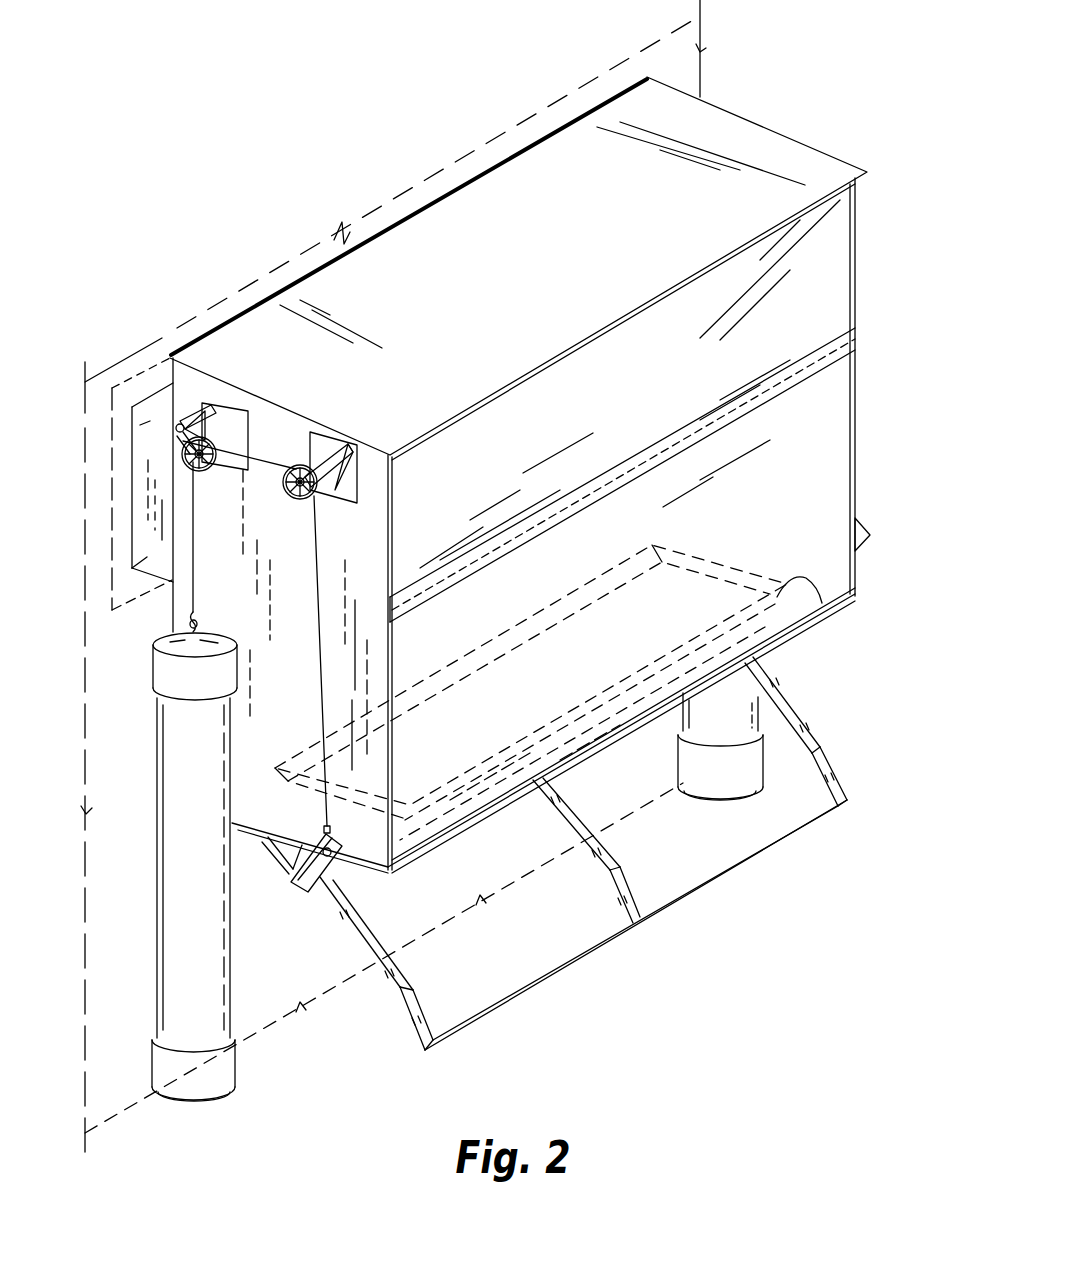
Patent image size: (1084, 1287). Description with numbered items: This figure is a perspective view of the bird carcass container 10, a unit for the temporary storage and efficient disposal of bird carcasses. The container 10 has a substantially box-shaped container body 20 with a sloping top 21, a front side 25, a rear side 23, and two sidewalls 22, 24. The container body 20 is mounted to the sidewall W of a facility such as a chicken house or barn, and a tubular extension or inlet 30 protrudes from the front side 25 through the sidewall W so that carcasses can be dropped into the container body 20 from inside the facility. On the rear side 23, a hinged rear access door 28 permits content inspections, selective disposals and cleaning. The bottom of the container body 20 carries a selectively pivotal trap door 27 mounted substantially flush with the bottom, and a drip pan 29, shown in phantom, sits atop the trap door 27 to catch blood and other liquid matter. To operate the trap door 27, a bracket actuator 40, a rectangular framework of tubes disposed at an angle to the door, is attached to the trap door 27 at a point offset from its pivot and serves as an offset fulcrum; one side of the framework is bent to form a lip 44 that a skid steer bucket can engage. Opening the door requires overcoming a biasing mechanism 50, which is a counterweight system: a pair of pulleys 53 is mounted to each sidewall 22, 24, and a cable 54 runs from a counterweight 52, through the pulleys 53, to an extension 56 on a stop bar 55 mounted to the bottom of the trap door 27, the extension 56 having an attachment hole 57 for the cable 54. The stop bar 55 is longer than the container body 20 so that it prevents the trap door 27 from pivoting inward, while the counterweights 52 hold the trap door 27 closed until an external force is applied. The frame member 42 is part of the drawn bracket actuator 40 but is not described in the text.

The bird carcass container 10 is at (873, 66).
The container body 20 is at (540, 502).
The sloping top 21 is at (520, 257).
The sidewall 22 is at (341, 591).
The rear side 23 is at (822, 503).
The sidewall 24 is at (857, 245).
The front side 25 is at (172, 364).
The trap door 27 is at (793, 637).
The rear access door 28 is at (613, 404).
The drip pan 29 is at (826, 617).
The inlet 30 is at (145, 561).
The bracket actuator 40 is at (485, 895).
The frame arm 42 is at (802, 716).
The lip 44 is at (552, 978).
The biasing mechanism 50 is at (142, 824).
The counterweight 52 is at (731, 789).
The pulleys 53 is at (288, 487).
The cable 54 is at (196, 585).
The stop bar 55 is at (338, 866).
The extension 56 is at (869, 534).
The attachment hole 57 is at (290, 868).
The sidewall W is at (130, 962).